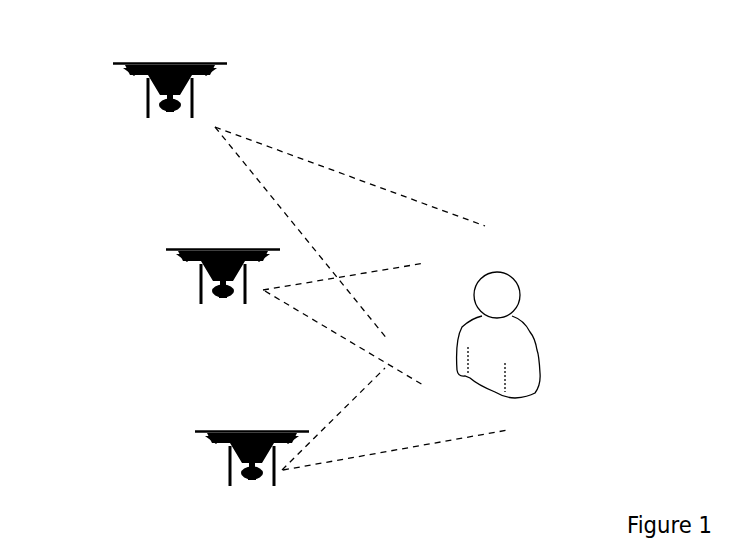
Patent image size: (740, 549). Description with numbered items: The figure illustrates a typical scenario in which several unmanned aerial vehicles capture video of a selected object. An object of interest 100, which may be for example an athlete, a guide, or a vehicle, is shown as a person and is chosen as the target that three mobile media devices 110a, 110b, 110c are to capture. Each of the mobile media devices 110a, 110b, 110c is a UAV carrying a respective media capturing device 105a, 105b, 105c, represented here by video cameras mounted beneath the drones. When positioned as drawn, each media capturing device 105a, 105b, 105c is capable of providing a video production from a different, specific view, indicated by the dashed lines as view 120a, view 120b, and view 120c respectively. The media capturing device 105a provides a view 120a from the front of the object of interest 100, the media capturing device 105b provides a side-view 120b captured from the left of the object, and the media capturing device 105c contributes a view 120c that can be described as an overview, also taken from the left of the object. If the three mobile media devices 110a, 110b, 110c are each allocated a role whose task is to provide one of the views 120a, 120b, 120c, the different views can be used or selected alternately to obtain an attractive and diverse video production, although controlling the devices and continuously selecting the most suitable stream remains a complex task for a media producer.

The object of interest 100 is at (532, 322).
The media capturing device 105a is at (253, 486).
The media capturing device 105b is at (222, 300).
The media capturing device 105c is at (174, 115).
The mobile media device 110a is at (207, 458).
The mobile media device 110b is at (172, 294).
The mobile media device 110c is at (127, 98).
The view 120a is at (383, 455).
The side-view 120b is at (332, 330).
The view 120c is at (332, 168).